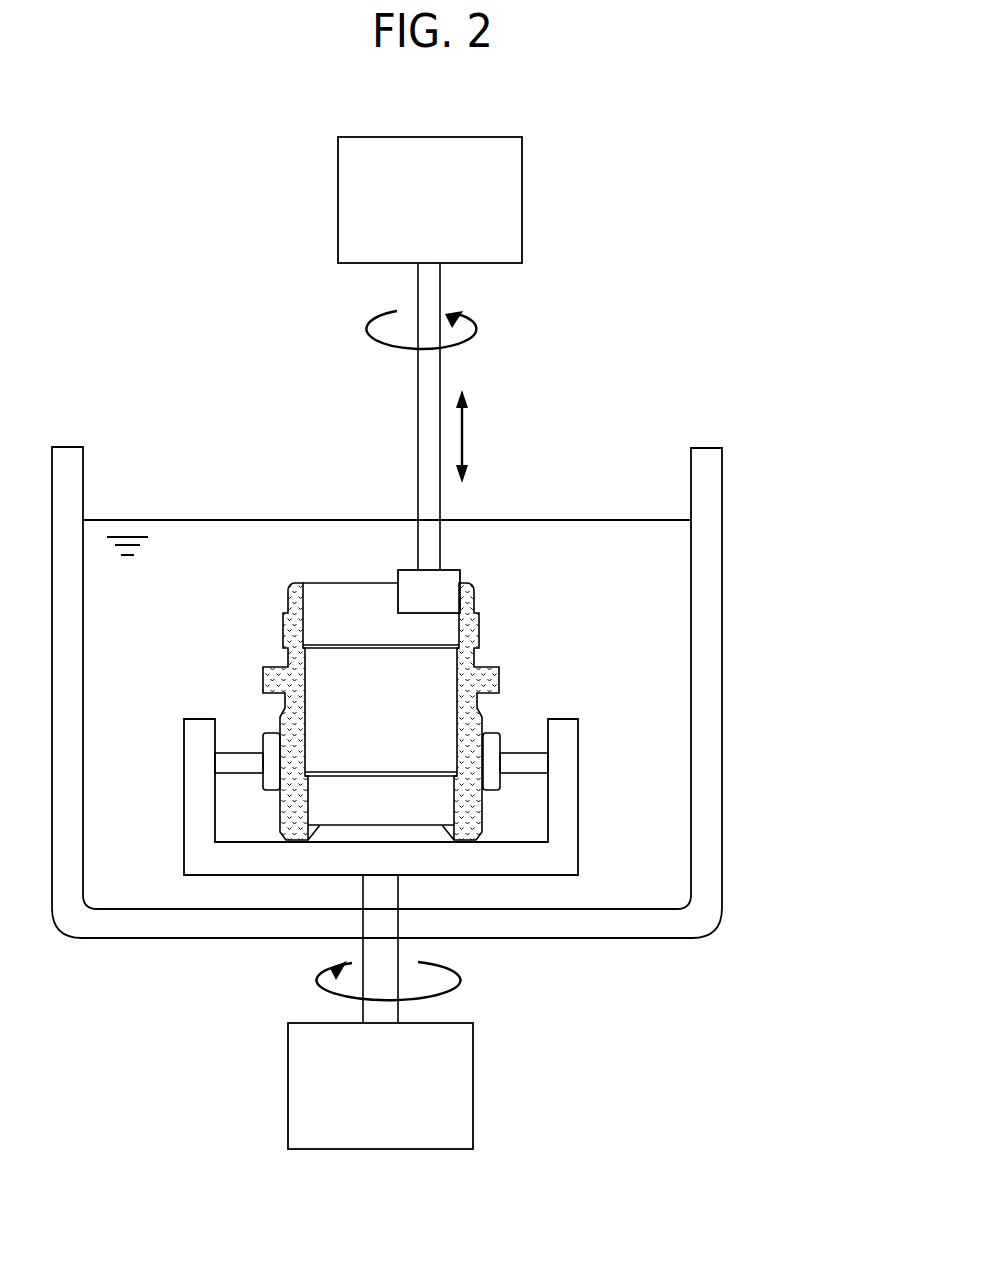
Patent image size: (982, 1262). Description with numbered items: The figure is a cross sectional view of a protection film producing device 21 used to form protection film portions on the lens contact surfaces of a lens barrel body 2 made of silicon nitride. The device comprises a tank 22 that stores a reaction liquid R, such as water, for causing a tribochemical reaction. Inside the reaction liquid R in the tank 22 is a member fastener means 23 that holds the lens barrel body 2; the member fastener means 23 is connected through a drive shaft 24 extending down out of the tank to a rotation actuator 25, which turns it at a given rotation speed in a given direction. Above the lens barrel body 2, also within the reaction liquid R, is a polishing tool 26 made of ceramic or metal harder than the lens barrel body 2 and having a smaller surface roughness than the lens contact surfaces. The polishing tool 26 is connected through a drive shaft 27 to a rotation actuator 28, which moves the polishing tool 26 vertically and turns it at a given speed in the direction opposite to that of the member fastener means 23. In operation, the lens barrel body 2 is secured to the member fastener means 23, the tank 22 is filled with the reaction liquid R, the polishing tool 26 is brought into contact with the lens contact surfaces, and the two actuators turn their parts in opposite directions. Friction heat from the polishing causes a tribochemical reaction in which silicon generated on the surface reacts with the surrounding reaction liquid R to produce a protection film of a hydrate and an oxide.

The lens barrel body 2 is at (499, 680).
The protection film producing device 21 is at (735, 236).
The tank 22 is at (720, 488).
The member fastener means 23 is at (580, 790).
The drive shaft 24 is at (400, 979).
The rotation actuator 25 is at (473, 1090).
The polishing tool 26 is at (398, 570).
The drive shaft 27 is at (418, 428).
The rotation actuator 28 is at (522, 193).
The reaction liquid R is at (598, 538).